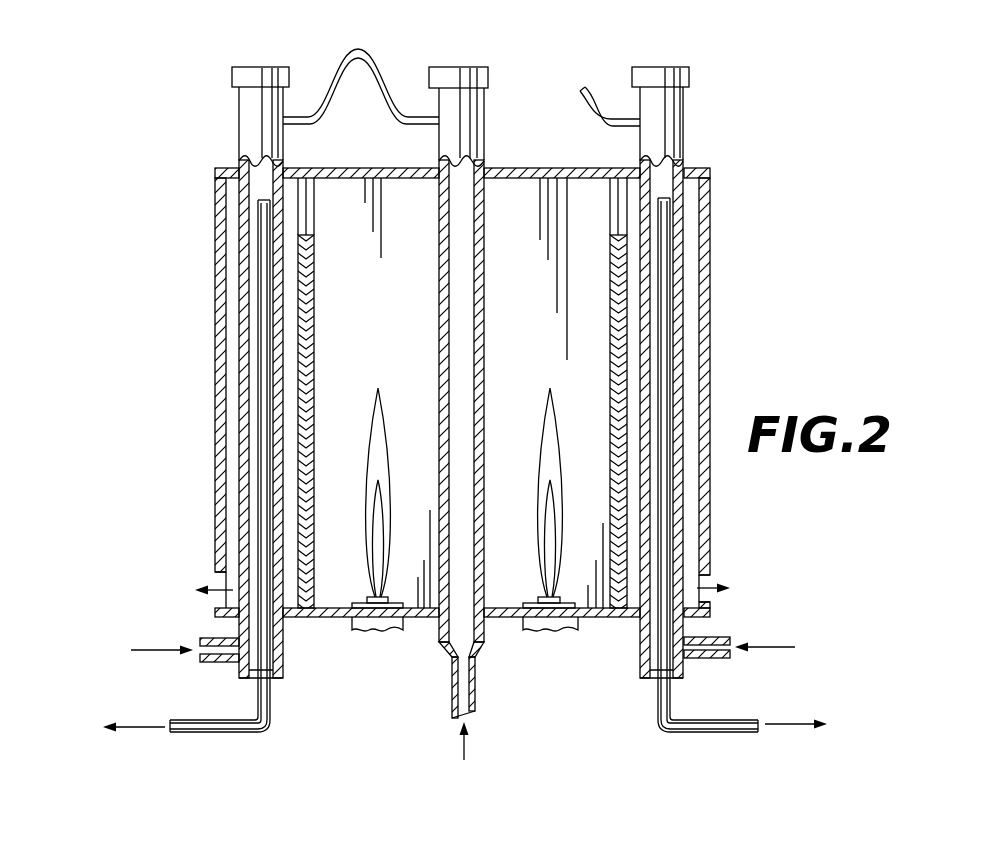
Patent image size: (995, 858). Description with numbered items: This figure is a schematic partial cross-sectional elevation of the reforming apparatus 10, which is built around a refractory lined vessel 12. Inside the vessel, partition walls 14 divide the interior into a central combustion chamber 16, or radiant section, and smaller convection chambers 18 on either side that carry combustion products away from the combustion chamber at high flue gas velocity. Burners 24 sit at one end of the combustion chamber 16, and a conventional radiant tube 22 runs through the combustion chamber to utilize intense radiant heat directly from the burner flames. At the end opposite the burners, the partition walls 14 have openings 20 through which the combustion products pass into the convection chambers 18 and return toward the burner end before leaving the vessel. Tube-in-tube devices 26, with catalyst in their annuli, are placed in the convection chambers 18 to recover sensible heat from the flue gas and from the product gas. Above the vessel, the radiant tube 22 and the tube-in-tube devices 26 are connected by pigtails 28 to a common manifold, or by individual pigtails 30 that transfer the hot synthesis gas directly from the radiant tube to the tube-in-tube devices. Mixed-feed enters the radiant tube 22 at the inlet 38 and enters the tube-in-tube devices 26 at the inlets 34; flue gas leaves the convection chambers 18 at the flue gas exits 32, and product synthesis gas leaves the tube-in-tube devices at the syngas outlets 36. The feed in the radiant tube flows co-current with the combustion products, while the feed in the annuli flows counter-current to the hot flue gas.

The apparatus 10 is at (142, 99).
The refractory lined vessel 12 is at (711, 237).
The partition wall 14 is at (304, 526).
The combustion chamber 16 is at (585, 257).
The convection chamber 18 is at (233, 443).
The opening 20 is at (312, 199).
The radiant tube 22 is at (485, 591).
The burner 24 is at (348, 626).
The tube-in-tube device 26 is at (239, 255).
The pigtail 28 is at (598, 90).
The individual pigtail 30 is at (348, 56).
The flue gas exit 32 is at (221, 605).
The inlet 34 is at (218, 663).
The syngas outlet 36 is at (197, 735).
The inlet 38 is at (476, 707).